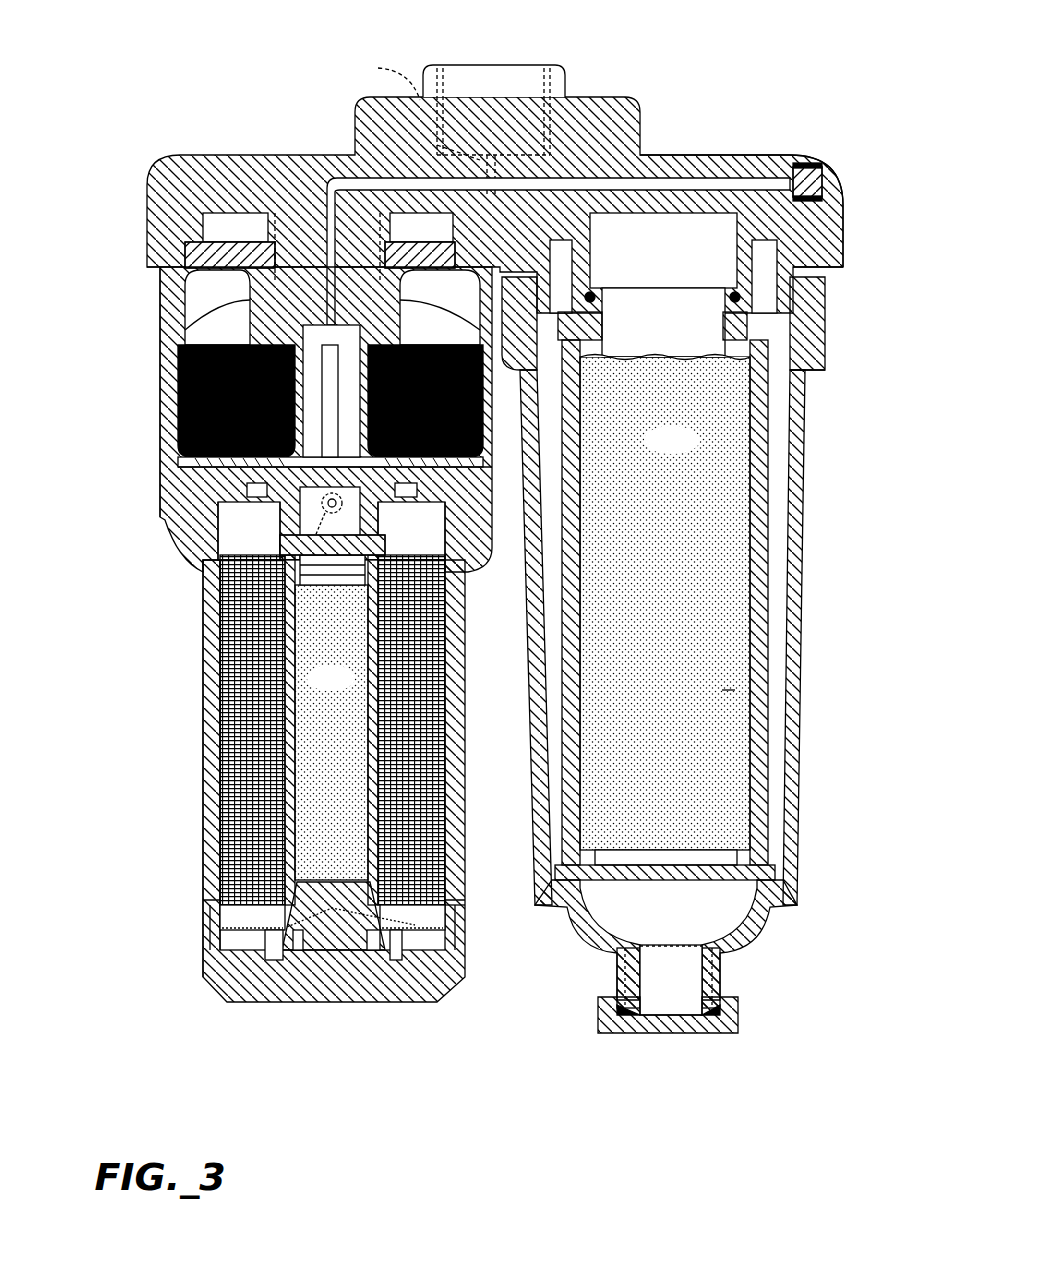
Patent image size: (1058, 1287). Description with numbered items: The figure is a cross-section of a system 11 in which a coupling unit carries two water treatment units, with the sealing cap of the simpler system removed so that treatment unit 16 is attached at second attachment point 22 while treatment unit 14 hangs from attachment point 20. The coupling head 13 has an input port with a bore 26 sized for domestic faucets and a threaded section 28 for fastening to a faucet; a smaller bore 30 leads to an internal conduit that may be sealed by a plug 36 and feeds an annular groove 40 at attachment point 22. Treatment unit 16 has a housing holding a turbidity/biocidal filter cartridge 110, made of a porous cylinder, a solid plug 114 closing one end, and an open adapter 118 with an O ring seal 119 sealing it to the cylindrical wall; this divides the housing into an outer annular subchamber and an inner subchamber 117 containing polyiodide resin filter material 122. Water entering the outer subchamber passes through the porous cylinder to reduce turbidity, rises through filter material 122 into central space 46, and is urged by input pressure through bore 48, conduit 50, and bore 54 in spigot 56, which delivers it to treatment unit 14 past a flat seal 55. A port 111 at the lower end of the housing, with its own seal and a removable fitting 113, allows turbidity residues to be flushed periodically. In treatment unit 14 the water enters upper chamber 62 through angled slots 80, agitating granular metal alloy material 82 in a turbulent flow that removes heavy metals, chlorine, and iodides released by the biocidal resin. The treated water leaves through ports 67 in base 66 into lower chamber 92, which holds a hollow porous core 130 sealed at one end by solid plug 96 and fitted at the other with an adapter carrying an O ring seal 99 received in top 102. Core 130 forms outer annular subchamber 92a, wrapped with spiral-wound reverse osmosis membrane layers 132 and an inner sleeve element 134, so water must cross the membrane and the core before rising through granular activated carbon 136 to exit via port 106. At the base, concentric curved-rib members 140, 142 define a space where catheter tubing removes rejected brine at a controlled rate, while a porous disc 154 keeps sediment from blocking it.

The system 11 is at (580, 1100).
The head 13 is at (575, 70).
The treatment unit 14 is at (190, 713).
The treatment unit 16 is at (825, 530).
The attachment point 20 is at (157, 275).
The attachment point 22 is at (838, 276).
The bore 26 is at (512, 78).
The threaded section 28 is at (462, 65).
The bore 30 is at (382, 78).
The plug 36 is at (822, 180).
The annular groove 40 is at (770, 262).
The central space 46 is at (646, 258).
The bore 48 is at (683, 190).
The conduit 50 is at (730, 183).
The bore 54 is at (308, 185).
The flat seal 55 is at (235, 322).
The spigot 56 is at (243, 230).
The upper chamber 62 is at (432, 321).
The base 66 is at (458, 520).
The ports 67 is at (178, 505).
The angled slots 80 is at (180, 405).
The granular metal alloy material 82 is at (180, 372).
The lower chamber 92 is at (387, 538).
The outer annular subchamber 92a is at (228, 915).
The solid sealing plug 96 is at (325, 905).
The O ring seal 99 is at (205, 615).
The top 102 is at (195, 548).
The port 106 is at (210, 597).
The turbidity/biocidal filter cartridge 110 is at (778, 767).
The port 111 is at (723, 965).
The drain fitting 113 is at (712, 1032).
The solid plug 114 is at (782, 867).
The inner subchamber 117 is at (653, 450).
The open adapter 118 is at (800, 380).
The O ring seal 119 is at (740, 300).
The filter material 122 is at (722, 707).
The hollow cylindrical core 130 is at (215, 655).
The reverse osmosis membrane layers 132 is at (200, 775).
The sleeve end 134 is at (200, 860).
The granular activated carbon 136 is at (200, 897).
The curved-rib member 140 is at (272, 950).
The curved-rib member 142 is at (390, 940).
The disc of porous material 154 is at (463, 953).